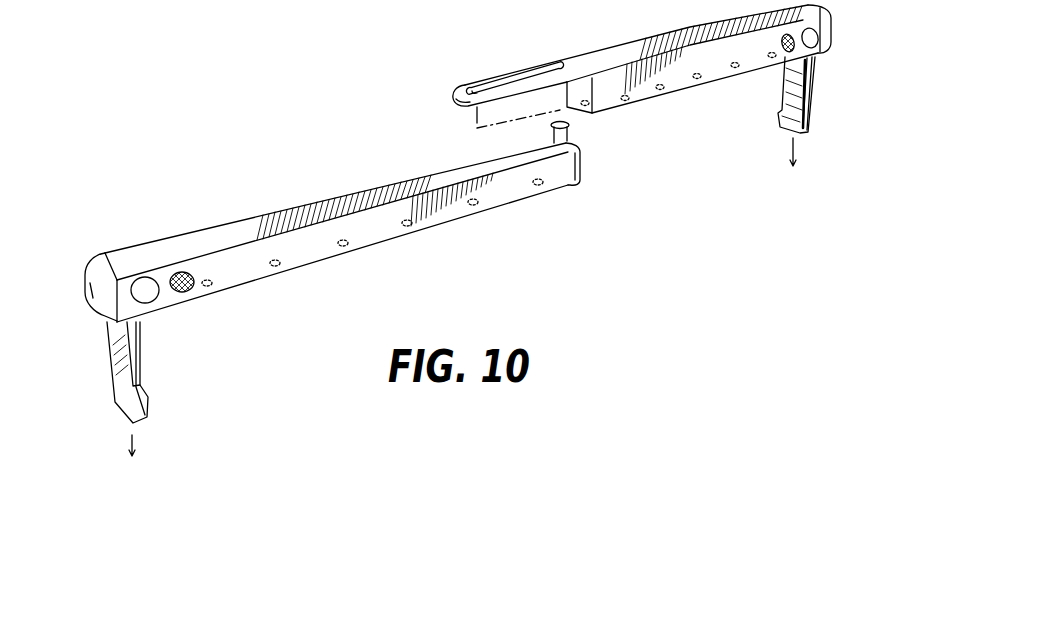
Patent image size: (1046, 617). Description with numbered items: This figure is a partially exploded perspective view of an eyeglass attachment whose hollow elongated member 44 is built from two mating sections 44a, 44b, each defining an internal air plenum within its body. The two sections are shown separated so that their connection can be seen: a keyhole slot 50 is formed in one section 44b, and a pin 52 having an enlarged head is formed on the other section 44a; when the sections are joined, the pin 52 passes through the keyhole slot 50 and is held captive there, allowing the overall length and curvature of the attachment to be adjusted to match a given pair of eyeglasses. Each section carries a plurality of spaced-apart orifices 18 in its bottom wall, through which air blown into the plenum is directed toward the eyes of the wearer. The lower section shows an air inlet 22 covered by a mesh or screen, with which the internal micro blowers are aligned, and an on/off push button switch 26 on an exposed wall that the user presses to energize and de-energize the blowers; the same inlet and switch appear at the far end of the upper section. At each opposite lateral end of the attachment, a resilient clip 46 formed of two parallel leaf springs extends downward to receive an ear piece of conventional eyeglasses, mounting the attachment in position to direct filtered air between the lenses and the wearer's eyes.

The elongated member 44 is at (306, 121).
The first section of elongated member 44a is at (233, 223).
The second section of elongated member 44b is at (603, 47).
The keyhole slot 50 is at (497, 78).
The pin 52 is at (569, 130).
The on/off push button switch 26 is at (145, 277).
The air inlet 22 is at (791, 0).
The orifices 18 is at (267, 277).
The resilient clip 46 is at (105, 345).